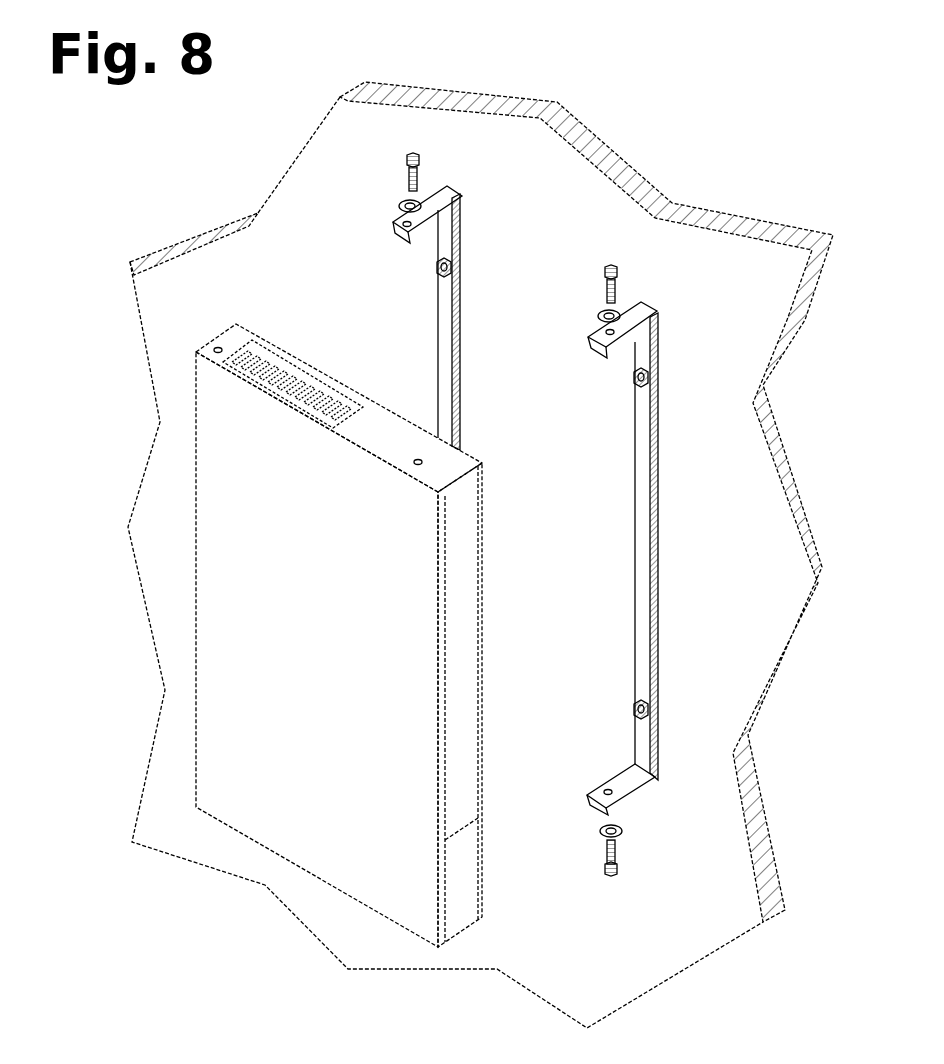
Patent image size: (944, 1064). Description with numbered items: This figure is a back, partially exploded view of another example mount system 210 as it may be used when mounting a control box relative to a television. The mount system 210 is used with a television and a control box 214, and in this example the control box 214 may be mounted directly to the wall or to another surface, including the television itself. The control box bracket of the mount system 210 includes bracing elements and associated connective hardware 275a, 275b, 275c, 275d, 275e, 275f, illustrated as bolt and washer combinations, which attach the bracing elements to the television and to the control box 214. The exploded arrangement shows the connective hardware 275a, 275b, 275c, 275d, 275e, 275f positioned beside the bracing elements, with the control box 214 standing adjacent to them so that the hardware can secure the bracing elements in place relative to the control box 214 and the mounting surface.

The mount system 210 is at (114, 209).
The control box 214 is at (356, 646).
The connective hardware 275a is at (405, 157).
The connective hardware 275b is at (437, 263).
The connective hardware 275c is at (607, 270).
The connective hardware 275d is at (632, 377).
The connective hardware 275e is at (637, 703).
The connective hardware 275f is at (605, 867).